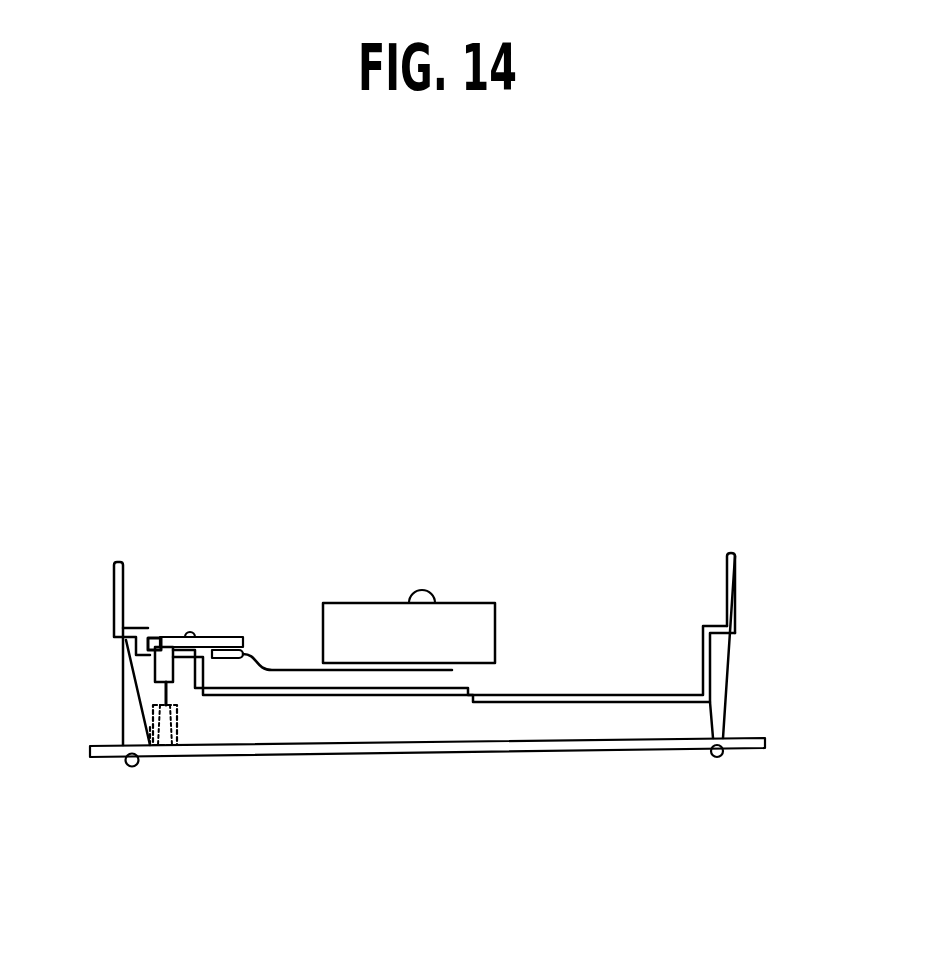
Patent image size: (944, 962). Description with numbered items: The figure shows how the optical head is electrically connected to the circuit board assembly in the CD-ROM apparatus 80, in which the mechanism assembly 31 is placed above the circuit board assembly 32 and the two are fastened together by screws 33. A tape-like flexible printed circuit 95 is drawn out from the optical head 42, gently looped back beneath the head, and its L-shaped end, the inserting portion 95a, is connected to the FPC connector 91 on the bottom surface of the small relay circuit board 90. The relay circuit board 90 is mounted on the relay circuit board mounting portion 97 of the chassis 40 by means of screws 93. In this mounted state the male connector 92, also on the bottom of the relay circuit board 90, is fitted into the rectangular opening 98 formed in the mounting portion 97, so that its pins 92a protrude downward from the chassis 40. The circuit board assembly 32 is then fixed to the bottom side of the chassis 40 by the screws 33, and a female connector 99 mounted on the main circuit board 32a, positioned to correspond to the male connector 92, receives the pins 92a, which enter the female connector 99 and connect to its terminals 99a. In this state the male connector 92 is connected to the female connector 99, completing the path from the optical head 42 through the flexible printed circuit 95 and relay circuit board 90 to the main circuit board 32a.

The CD-ROM apparatus 80 is at (635, 246).
The mechanism assembly 31 is at (778, 710).
The circuit board assembly 32 is at (778, 720).
The main circuit board 32a is at (544, 753).
The screws 33 is at (132, 767).
The chassis 40 is at (738, 546).
The optical head 42 is at (473, 594).
The relay circuit board 90 is at (239, 627).
The FPC connector 91 is at (223, 658).
The male connector 92 is at (153, 670).
The pins 92a is at (165, 697).
The screws 93 is at (195, 628).
The flexible printed circuit 95 is at (352, 673).
The inserting portion 95a is at (240, 663).
The relay circuit board mounting portion 97 is at (188, 631).
The rectangular opening 98 is at (153, 636).
The female connector 99 is at (178, 716).
The terminals 99a is at (150, 745).